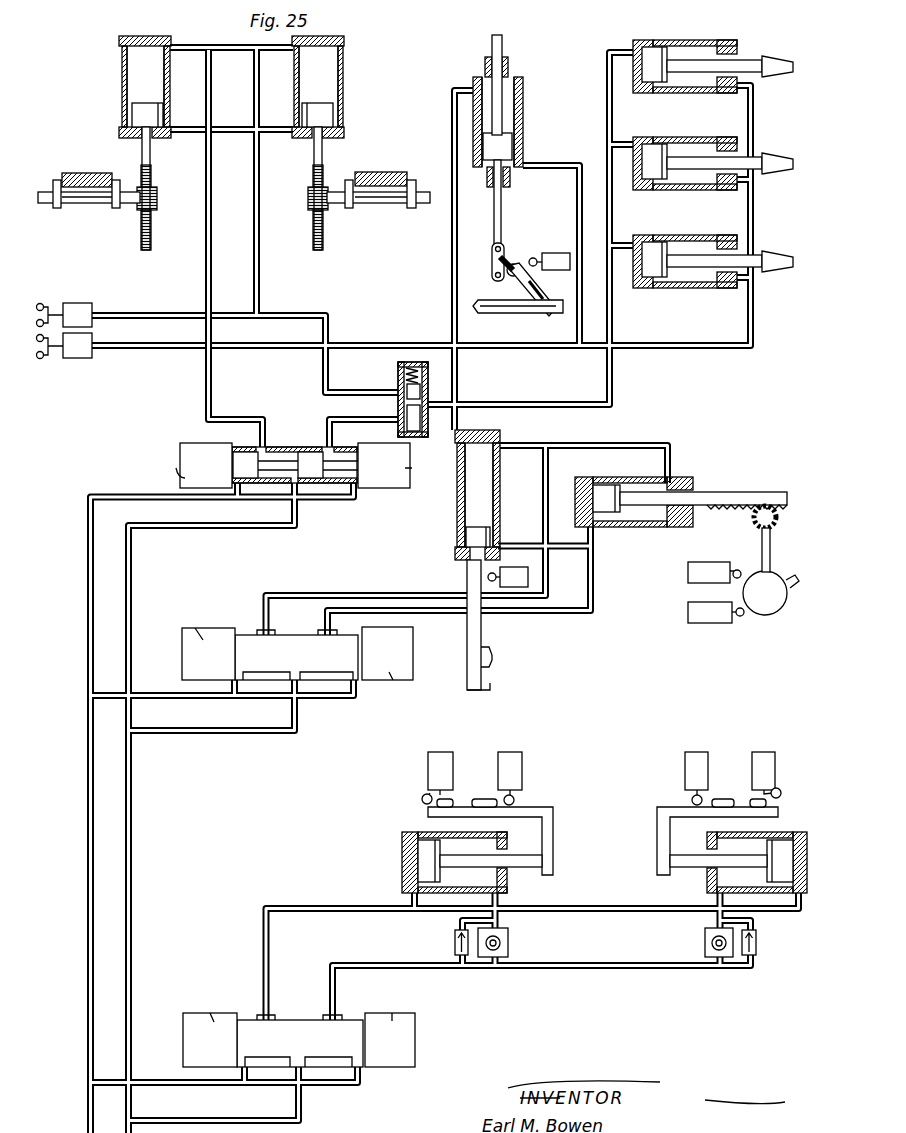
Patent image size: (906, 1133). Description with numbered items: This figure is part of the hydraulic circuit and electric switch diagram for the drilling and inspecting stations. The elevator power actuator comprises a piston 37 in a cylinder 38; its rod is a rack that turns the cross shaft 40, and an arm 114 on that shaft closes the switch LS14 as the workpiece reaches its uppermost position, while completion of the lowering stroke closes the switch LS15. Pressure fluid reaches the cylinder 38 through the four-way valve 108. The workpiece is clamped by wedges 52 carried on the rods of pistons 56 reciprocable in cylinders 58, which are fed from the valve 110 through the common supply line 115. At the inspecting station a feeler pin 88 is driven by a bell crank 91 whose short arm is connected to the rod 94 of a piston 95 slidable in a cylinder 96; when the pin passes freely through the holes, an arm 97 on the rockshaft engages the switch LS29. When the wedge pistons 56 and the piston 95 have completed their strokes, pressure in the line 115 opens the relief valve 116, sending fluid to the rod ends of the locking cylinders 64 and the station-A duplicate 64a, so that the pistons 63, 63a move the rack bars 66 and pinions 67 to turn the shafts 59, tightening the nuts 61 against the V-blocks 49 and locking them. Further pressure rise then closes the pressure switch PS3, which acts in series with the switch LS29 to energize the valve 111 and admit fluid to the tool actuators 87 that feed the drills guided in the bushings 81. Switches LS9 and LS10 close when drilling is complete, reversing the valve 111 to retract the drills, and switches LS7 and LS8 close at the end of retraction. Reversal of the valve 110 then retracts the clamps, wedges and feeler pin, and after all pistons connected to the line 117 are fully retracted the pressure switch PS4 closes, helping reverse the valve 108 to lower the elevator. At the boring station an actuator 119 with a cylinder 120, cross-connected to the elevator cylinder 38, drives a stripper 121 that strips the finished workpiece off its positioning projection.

The vertical hydraulic cylinder 64 is at (130, 70).
The vertical hydraulic cylinder (station A) 64a is at (340, 72).
The piston 63 is at (132, 110).
The piston (station A) 63a is at (340, 108).
The rack bar 66 is at (151, 170).
The pinion 67 is at (157, 203).
The V-block 49 is at (82, 175).
The shaft 59 is at (90, 203).
The nuts 61 is at (57, 208).
The rod 94 is at (494, 214).
The piston 95 is at (513, 140).
The cylinder 96 is at (520, 112).
The arm 97 is at (517, 253).
The bell crank 91 is at (536, 292).
The feeler pin 88 is at (508, 313).
The switch LS29 is at (560, 252).
The pistons 56 is at (657, 48).
The cylinders 58 is at (707, 48).
The wedges 52 is at (776, 63).
The pressure switch PS3 is at (90, 299).
The pressure switch PS4 is at (78, 358).
The line 117 is at (207, 392).
The pressure responsive relief valve 116 is at (398, 376).
The common supply line 115 is at (385, 422).
The four-way valve 110 is at (293, 443).
The actuator 119 is at (504, 438).
The cylinder 120 is at (465, 520).
The stripper 121 is at (490, 690).
The piston 37 is at (605, 488).
The cylinder 38 is at (642, 508).
The arm 114 is at (785, 581).
The cross shaft 40 is at (770, 550).
The switch LS15 is at (703, 562).
The switch LS14 is at (718, 623).
The four-way valve 108 is at (324, 694).
The switch LS8 is at (438, 752).
The switch LS10 is at (510, 752).
The switch LS9 is at (697, 752).
The switch LS7 is at (768, 752).
The bushings 81 is at (548, 802).
The hydraulic actuators 87 is at (398, 826).
The four-way valve 111 is at (296, 1020).